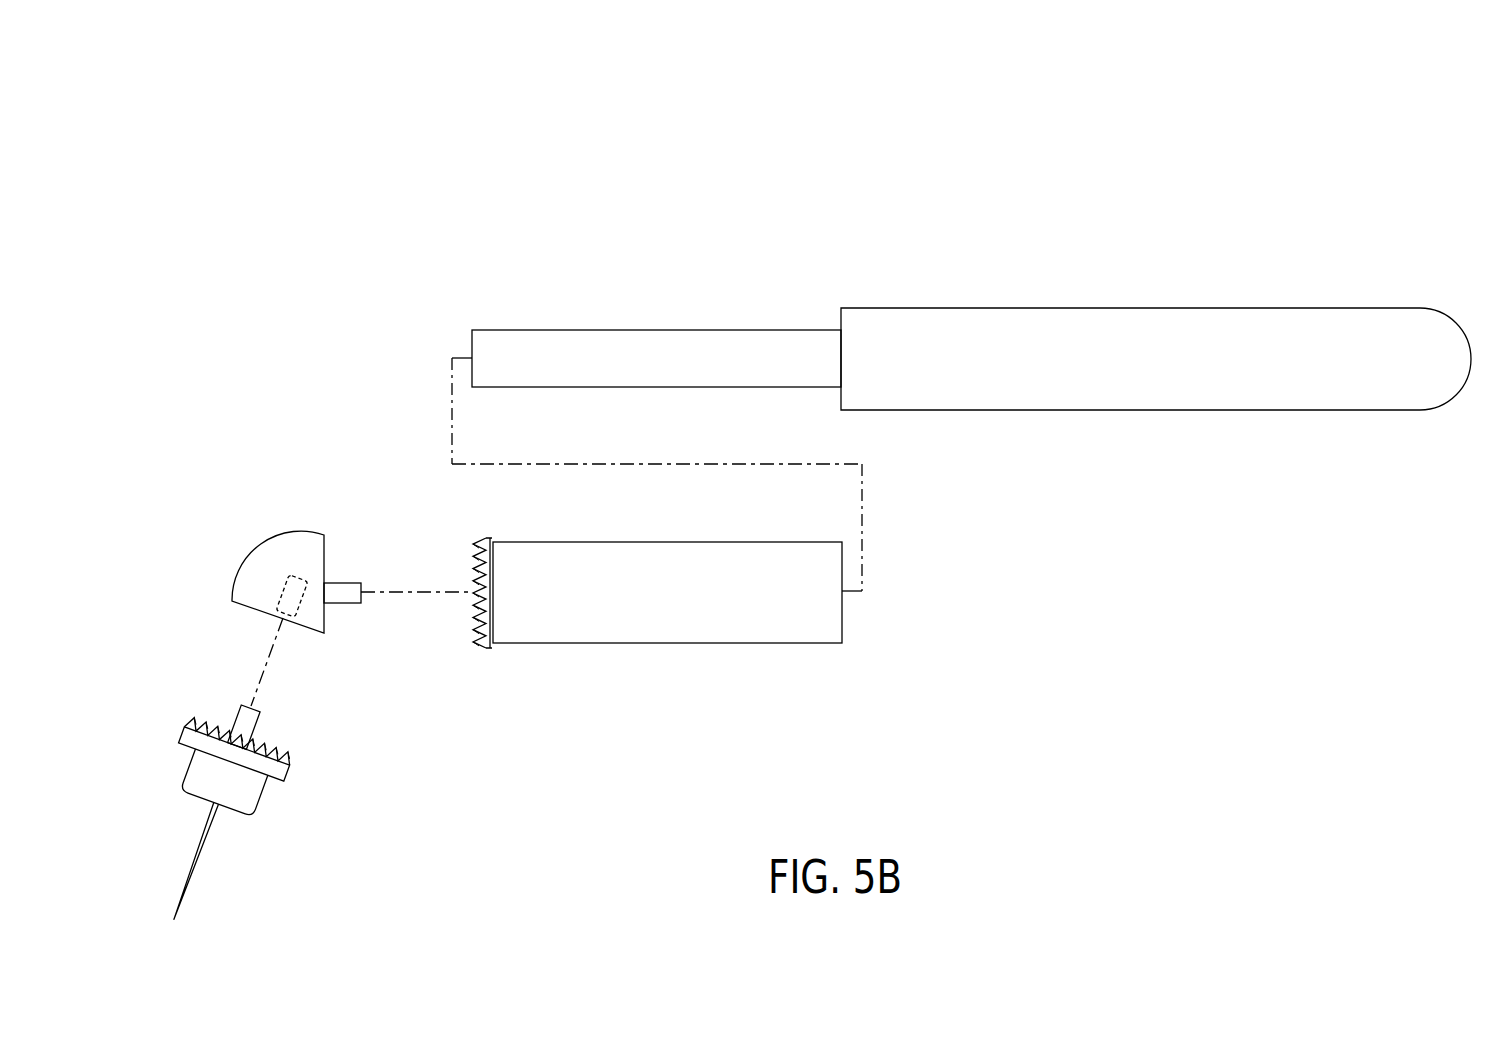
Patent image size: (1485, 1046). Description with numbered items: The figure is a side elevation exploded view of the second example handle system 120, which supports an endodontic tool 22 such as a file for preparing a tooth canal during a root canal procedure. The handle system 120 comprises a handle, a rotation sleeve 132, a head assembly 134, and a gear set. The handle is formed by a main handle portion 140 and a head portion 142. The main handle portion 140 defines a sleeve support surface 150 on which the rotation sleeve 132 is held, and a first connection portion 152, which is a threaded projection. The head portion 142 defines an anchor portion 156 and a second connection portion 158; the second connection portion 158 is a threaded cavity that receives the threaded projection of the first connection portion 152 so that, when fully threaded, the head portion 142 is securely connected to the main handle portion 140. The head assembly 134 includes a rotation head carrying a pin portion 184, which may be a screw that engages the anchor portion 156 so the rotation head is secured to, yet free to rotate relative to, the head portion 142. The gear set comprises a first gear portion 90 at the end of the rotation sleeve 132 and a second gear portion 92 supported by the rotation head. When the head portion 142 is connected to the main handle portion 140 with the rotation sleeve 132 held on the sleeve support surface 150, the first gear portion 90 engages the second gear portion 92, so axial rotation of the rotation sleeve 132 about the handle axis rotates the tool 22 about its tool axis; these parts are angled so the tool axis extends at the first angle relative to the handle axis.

The handle system 120 is at (1257, 139).
The main handle portion 140 is at (1110, 308).
The sleeve support surface 150 is at (638, 343).
The first connection portion 152 is at (657, 438).
The rotation sleeve 132 is at (708, 626).
The bevel gear 90 is at (472, 631).
The head portion 142 is at (254, 553).
The second connection portion 158 is at (350, 592).
The anchor portion 156 is at (300, 618).
The head assembly 134 is at (217, 813).
The pin portion 184 is at (247, 722).
The bevel gear 92 is at (285, 770).
The needle 22 is at (187, 890).